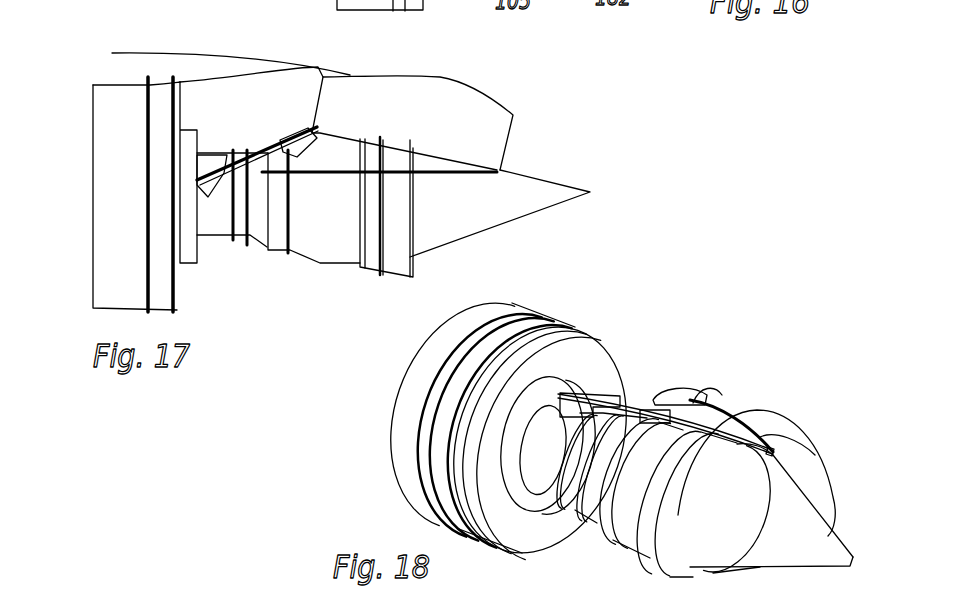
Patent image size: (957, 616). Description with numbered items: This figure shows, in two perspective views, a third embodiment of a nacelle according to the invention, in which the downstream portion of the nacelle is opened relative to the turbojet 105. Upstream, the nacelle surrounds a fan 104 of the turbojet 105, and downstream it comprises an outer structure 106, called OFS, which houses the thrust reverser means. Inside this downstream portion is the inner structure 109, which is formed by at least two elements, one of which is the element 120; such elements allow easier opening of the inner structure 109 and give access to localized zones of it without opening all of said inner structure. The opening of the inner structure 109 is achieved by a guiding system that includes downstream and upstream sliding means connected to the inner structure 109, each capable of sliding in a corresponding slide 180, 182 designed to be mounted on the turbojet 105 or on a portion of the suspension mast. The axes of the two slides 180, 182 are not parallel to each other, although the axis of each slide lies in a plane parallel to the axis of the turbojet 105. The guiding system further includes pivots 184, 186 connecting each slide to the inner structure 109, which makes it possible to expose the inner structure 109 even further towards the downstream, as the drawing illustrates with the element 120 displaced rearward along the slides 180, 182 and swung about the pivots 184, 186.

In FIG. 17, the fan 104 is at (100, 106).
In FIG. 18, the fan 104 is at (445, 355).
In FIG. 17, the turbojet 105 is at (302, 268).
In FIG. 18, the turbojet 105 is at (638, 565).
In FIG. 17, the outer structure 106 is at (245, 53).
In FIG. 17, the inner structure 109 is at (505, 94).
In FIG. 17, the element 120 is at (430, 117).
In FIG. 18, the element 120 is at (805, 480).
In FIG. 17, the slide 180 is at (211, 182).
In FIG. 18, the slide 180 is at (580, 402).
In FIG. 17, the slide 182 is at (343, 177).
In FIG. 18, the slide 182 is at (697, 403).
In FIG. 17, the pivot 184 is at (305, 128).
In FIG. 18, the pivot 184 is at (643, 397).
In FIG. 17, the pivot 186 is at (440, 173).
In FIG. 18, the pivot 186 is at (760, 437).